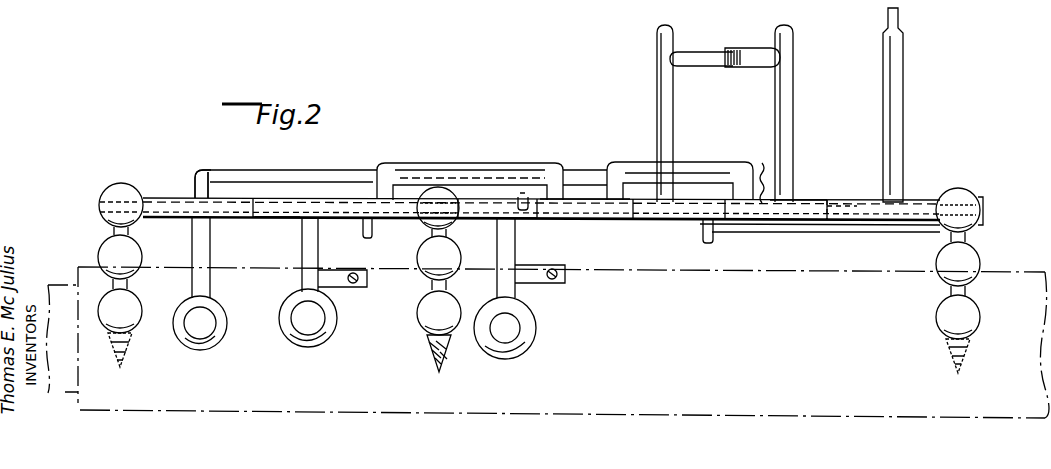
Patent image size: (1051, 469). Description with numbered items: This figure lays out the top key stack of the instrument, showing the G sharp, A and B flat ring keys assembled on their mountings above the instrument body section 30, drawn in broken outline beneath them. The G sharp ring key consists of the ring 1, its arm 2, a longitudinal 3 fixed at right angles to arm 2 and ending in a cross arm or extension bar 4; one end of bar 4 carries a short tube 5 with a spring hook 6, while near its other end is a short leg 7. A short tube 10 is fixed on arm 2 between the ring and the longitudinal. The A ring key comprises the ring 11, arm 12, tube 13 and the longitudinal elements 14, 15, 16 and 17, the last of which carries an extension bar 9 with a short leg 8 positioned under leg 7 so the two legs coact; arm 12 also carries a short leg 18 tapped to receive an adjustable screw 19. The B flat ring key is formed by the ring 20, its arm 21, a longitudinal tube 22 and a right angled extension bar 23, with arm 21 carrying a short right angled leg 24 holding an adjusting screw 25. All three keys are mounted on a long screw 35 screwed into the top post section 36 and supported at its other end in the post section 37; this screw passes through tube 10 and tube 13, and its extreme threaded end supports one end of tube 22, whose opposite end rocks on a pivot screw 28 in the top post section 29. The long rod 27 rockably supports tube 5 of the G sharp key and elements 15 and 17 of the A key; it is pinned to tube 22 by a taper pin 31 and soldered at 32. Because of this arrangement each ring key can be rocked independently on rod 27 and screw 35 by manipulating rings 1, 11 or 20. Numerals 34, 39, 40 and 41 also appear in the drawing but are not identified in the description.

The ring 1 is at (208, 344).
The arm 2 is at (200, 186).
The longitudinal 3 is at (300, 172).
The cross arm or extension bar 4 is at (660, 103).
The short tube 5 is at (688, 220).
The spring hook 6 is at (707, 242).
The short leg 7 is at (704, 58).
The short leg 8 is at (762, 54).
The extension bar 9 is at (790, 120).
The short tube 10 is at (176, 210).
The ring 11 is at (322, 342).
The arm 12 is at (302, 252).
The tube 13 is at (288, 208).
The longitudinal element 14 is at (435, 165).
The longitudinal element 15 is at (562, 218).
The longitudinal element 16 is at (716, 167).
The longitudinal element 17 is at (805, 200).
The short bar or leg 18 is at (355, 272).
The screw 19 is at (362, 284).
The ring 20 is at (528, 343).
The arm 21 is at (498, 246).
The longitudinal tube 22 is at (488, 205).
The right angled extension bar 23 is at (904, 100).
The short right angled leg 24 is at (535, 270).
The screw 25 is at (556, 282).
The long rod 27 is at (757, 171).
The pivot screw 28 is at (963, 200).
The top post section 29 is at (968, 235).
The instrument body section 30 is at (730, 418).
The taper pin 31 is at (523, 197).
The soldered joint 32 is at (838, 200).
The lower bar 34 is at (793, 232).
The long screw 35 is at (110, 190).
The top post section 36 is at (455, 226).
The top post section 37 is at (150, 184).
The ball 39 is at (108, 258).
The ball 40 is at (432, 258).
The ball 41 is at (940, 270).